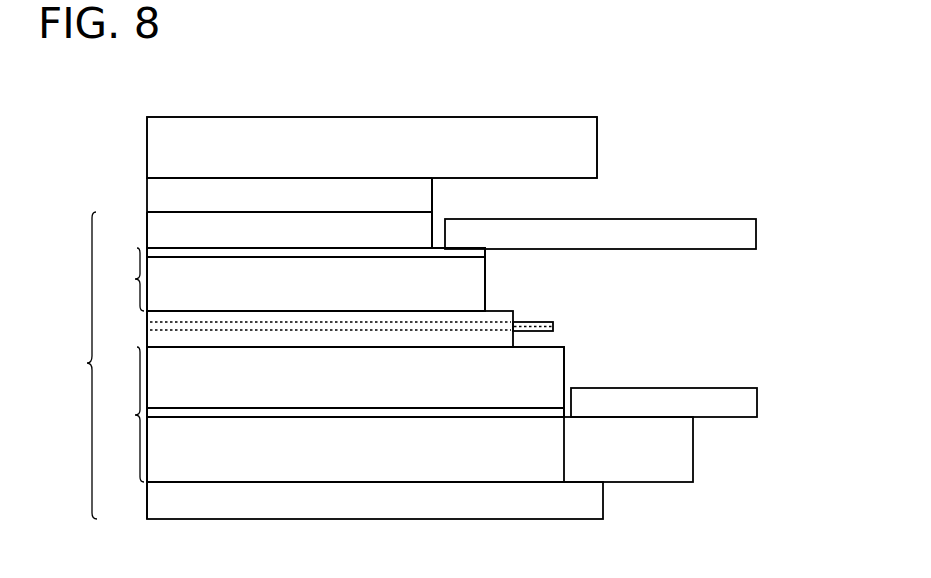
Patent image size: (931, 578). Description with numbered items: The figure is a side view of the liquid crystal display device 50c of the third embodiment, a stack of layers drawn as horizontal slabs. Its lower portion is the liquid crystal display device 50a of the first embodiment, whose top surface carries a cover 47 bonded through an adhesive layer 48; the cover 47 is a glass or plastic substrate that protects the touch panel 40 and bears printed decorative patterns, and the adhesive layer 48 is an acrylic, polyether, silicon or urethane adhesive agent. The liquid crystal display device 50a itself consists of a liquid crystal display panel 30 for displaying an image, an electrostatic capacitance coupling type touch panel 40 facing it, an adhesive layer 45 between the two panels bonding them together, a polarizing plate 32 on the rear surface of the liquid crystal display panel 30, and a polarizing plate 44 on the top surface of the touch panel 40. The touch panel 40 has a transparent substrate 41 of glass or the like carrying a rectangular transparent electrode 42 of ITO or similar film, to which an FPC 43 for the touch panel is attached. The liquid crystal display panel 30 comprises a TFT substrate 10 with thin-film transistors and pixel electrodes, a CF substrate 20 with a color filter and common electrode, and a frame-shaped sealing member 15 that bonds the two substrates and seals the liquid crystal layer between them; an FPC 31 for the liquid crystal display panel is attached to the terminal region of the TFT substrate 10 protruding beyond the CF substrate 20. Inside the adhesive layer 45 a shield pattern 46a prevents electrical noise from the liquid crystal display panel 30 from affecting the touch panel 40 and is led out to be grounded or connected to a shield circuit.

The liquid crystal display device 50c is at (140, 96).
The liquid crystal display device 50a is at (93, 365).
The cover 47 is at (147, 148).
The adhesive layer 48 is at (147, 199).
The polarizing plate 44 is at (432, 215).
The FPC for the touch panel 43 is at (750, 234).
The touch panel 40 is at (292, 279).
The transparent electrode 42 is at (485, 254).
The transparent substrate 41 is at (485, 287).
The shield pattern 46a is at (548, 322).
The adhesive layer 45 is at (515, 334).
The liquid crystal display panel 30 is at (332, 414).
The CF substrate 20 is at (565, 363).
The FPC for the liquid crystal display panel 31 is at (750, 400).
The TFT substrate 10 is at (688, 455).
The polarizing plate 32 is at (597, 502).
The sealing member 15 is at (459, 415).